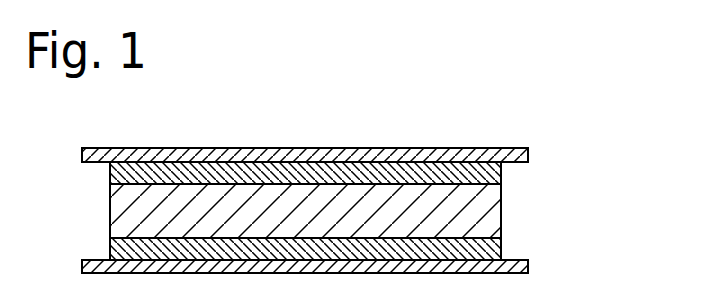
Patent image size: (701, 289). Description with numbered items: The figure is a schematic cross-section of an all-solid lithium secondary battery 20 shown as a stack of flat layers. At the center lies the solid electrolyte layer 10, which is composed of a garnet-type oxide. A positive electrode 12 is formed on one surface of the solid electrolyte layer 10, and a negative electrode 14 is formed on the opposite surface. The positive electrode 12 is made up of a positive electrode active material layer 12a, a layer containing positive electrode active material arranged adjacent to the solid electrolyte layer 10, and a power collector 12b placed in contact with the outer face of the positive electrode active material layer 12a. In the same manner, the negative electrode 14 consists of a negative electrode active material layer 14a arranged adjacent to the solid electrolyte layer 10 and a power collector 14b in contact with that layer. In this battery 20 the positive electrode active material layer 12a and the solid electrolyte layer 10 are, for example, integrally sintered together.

The all-solid lithium secondary battery 20 is at (517, 140).
The positive electrode 12 is at (607, 143).
The positive electrode active material layer 12a is at (502, 173).
The power collector 12b is at (530, 155).
The solid electrolyte layer 10 is at (503, 210).
The negative electrode 14 is at (607, 234).
The negative electrode active material layer 14a is at (502, 243).
The power collector 14b is at (530, 265).